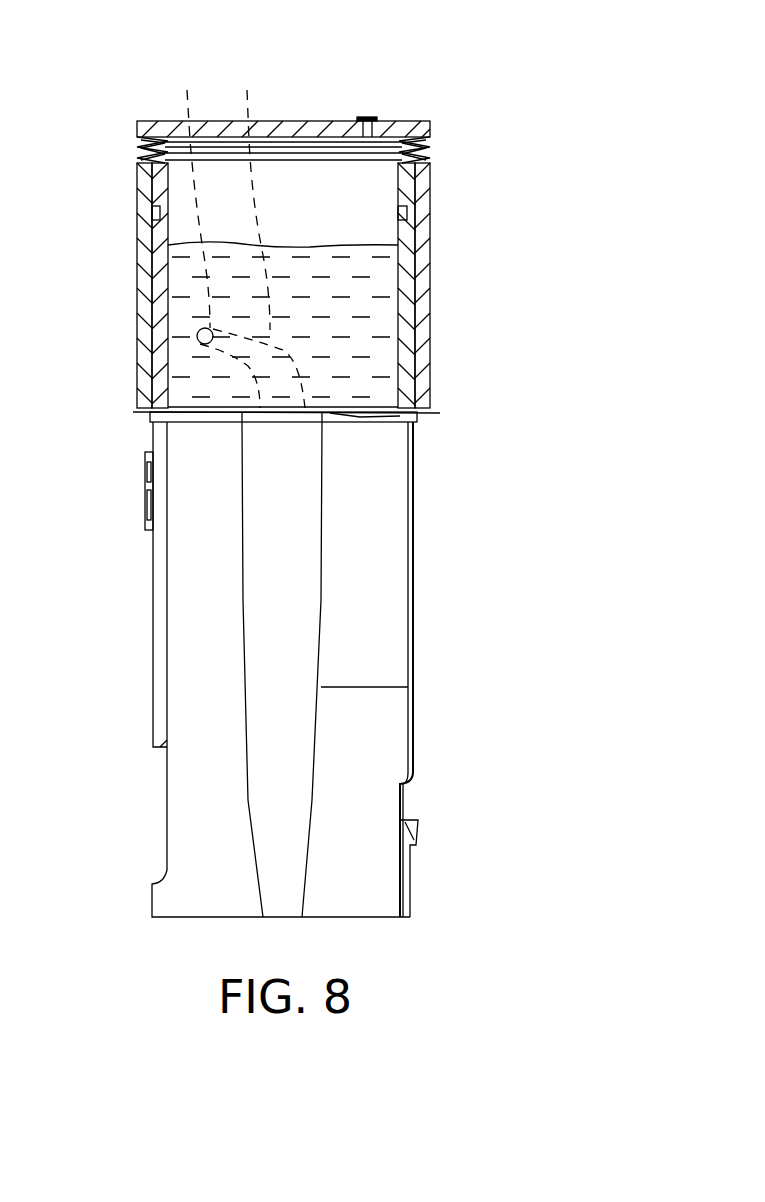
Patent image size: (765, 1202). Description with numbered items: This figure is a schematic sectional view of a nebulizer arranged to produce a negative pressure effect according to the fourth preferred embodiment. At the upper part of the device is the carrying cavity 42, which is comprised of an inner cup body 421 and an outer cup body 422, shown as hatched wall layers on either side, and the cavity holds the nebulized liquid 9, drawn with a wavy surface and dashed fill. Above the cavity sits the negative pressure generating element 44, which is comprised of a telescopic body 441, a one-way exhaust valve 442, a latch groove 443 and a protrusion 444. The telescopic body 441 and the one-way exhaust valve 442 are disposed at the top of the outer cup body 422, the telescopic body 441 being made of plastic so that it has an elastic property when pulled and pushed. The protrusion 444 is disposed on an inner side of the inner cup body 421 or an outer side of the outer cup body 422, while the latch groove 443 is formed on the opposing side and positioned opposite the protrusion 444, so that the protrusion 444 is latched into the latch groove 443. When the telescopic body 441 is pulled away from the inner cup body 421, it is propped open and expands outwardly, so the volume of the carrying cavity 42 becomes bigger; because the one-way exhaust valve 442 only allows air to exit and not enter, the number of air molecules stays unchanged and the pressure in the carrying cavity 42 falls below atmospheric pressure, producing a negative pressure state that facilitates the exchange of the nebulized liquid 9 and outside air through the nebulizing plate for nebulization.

The negative pressure generating element 44 is at (428, 58).
The telescopic body 441 is at (425, 145).
The one-way exhaust valve 442 is at (362, 136).
The latch groove 443 is at (259, 236).
The protrusion 444 is at (213, 236).
The carrying cavity 42 is at (64, 170).
The inner cup body 421 is at (152, 192).
The outer cup body 422 is at (152, 247).
The nebulized liquid 9 is at (372, 352).